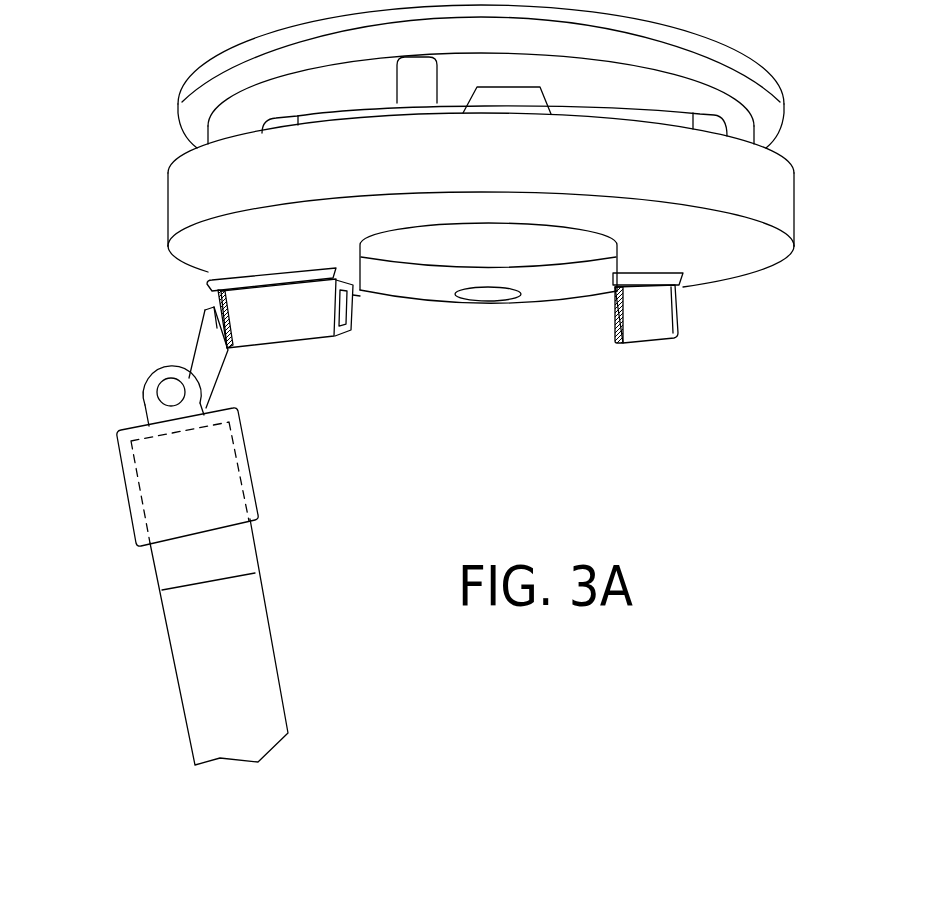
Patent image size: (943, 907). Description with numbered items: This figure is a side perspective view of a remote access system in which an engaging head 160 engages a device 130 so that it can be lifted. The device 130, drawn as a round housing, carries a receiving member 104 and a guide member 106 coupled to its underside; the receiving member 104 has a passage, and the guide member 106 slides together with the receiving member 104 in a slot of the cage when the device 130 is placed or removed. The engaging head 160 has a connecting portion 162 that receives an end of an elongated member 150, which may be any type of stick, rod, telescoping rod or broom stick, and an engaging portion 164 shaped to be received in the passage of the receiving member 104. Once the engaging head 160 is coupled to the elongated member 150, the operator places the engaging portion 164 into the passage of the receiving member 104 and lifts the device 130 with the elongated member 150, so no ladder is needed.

The device 130 is at (745, 283).
The receiving member 104 is at (273, 326).
The guide member 106 is at (642, 328).
The engaging portion 164 is at (191, 349).
The engaging head 160 is at (78, 408).
The connecting portion 162 is at (217, 481).
The elongated member 150 is at (250, 620).